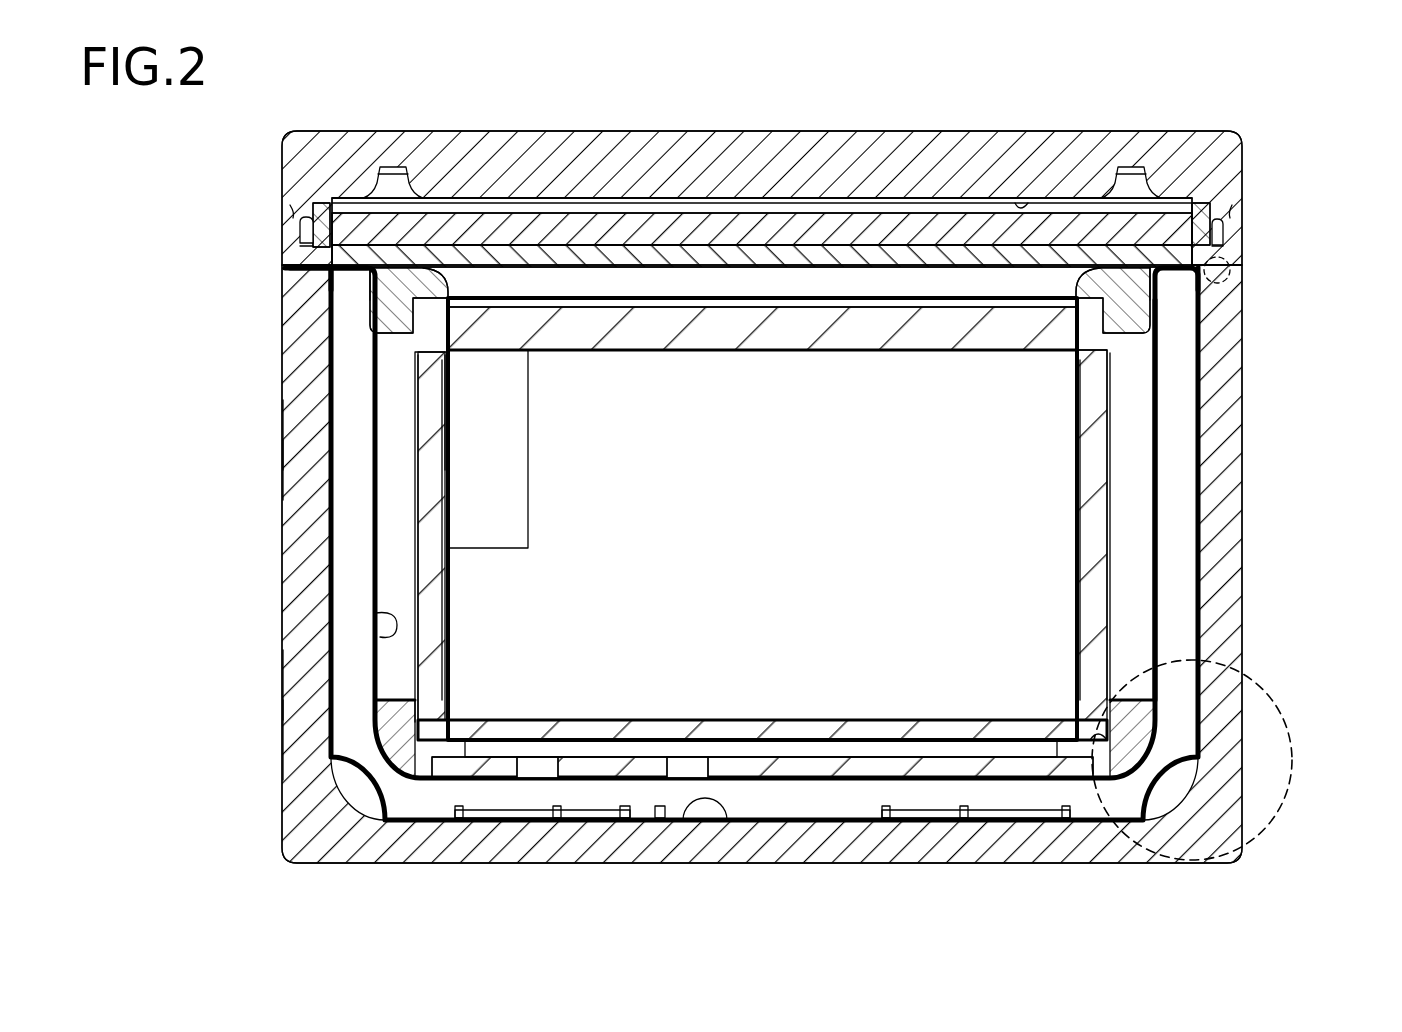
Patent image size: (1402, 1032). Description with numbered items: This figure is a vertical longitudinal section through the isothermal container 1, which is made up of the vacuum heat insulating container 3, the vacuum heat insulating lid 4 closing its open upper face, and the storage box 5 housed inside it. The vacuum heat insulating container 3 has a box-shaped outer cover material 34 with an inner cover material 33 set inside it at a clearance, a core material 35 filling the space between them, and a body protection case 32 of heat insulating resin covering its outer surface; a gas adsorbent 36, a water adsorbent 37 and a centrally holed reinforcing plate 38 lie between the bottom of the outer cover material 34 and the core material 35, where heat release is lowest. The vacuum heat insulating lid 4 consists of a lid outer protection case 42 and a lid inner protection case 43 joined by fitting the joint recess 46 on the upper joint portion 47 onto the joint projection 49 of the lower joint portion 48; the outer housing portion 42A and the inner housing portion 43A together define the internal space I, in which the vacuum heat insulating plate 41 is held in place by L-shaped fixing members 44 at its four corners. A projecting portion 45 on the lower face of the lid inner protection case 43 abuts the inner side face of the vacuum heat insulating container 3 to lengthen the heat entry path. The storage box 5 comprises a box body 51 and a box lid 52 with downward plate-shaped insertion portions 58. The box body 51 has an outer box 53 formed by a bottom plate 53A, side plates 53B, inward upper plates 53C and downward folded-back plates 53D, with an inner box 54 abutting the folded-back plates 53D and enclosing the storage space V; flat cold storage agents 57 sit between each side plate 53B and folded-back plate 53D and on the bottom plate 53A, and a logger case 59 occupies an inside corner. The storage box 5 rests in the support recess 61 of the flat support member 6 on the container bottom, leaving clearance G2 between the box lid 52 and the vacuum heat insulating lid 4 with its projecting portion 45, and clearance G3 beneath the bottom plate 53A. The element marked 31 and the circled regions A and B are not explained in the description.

The isothermal container 1 is at (782, 106).
The vacuum heat insulating container 3 is at (262, 357).
The vacuum heat insulating lid 4 is at (761, 202).
The storage box 5 is at (768, 489).
The support member 6 is at (1135, 722).
The side wall of body 31 is at (340, 412).
The body protection case 32 is at (307, 452).
The inner cover material 33 is at (375, 613).
The outer cover material 34 is at (328, 672).
The core material 35 is at (330, 718).
The gas adsorbent 36 is at (510, 818).
The water adsorbent 37 is at (540, 778).
The reinforcing plate 38 is at (692, 800).
The vacuum heat insulating plate 41 is at (820, 238).
The lid outer protection case 42 is at (300, 152).
The outer housing portion 42A is at (1025, 205).
The lid inner protection case 43 is at (330, 258).
The inner housing portion 43A is at (950, 247).
The fixing member 44 is at (368, 190).
The projecting portion 45 is at (385, 288).
The joint recess 46 is at (293, 213).
The upper joint portion 47 is at (305, 220).
The lower joint portion 48 is at (305, 247).
The joint projection 49 is at (302, 237).
The box body 51 is at (1115, 376).
The box lid 52 is at (1080, 300).
The outer box 53 is at (1162, 380).
The bottom plate 53A is at (1140, 722).
The side plate 53B is at (427, 657).
The upper plate 53C is at (350, 272).
The folded-back plate 53D is at (425, 545).
The inner box 54 is at (1070, 580).
The cold storage agent 57 is at (872, 325).
The insertion portion 58 is at (430, 490).
The logger case 59 is at (442, 545).
The support recess 61 is at (380, 282).
The detail region A is at (1230, 272).
The detail region B is at (1292, 775).
The clearance G2 is at (531, 283).
The clearance G3 is at (882, 750).
The internal space I is at (742, 212).
The storage space V is at (641, 480).